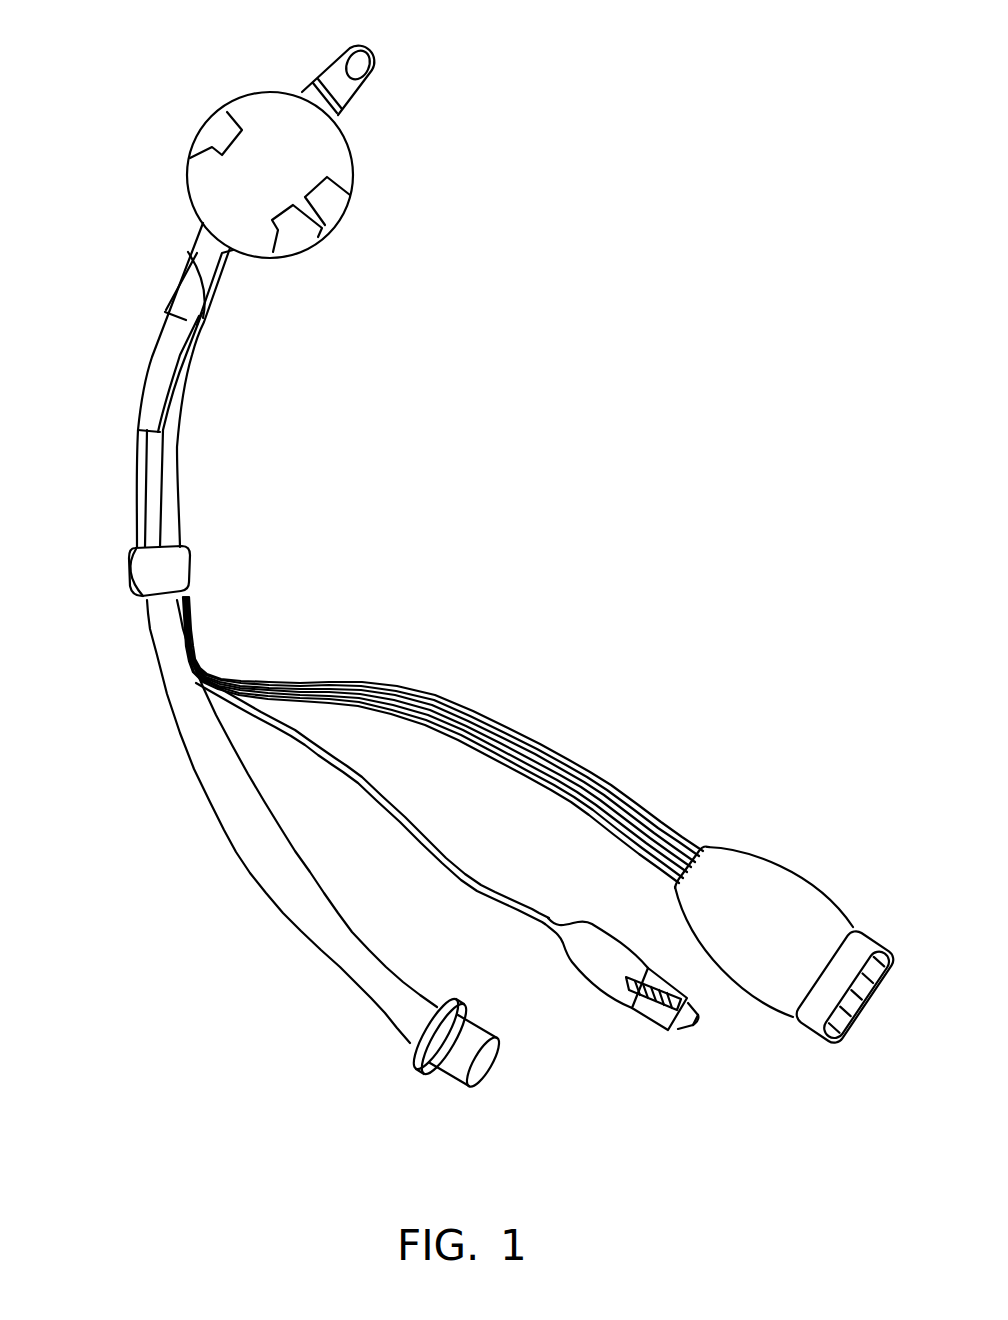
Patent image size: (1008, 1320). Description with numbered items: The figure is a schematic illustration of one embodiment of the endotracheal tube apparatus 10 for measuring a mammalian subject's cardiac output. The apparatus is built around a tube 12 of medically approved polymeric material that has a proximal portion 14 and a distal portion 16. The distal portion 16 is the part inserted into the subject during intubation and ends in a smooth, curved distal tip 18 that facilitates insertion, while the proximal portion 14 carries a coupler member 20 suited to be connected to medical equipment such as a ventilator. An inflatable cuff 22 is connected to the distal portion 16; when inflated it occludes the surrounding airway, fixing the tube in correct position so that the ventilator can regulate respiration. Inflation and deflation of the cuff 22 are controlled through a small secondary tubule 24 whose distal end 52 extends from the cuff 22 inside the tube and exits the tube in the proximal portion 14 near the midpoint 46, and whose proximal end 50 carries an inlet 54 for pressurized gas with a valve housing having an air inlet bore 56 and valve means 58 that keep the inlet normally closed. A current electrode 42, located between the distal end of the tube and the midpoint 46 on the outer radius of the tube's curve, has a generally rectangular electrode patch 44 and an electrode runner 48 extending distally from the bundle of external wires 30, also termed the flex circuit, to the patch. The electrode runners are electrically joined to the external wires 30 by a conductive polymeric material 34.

The apparatus 10 is at (106, 488).
The tube 12 is at (150, 630).
The proximal portion 14 is at (280, 895).
The distal portion 16 is at (160, 453).
The distal tip 18 is at (368, 56).
The coupler member 20 is at (460, 1067).
The inflatable cuff 22 is at (196, 204).
The secondary tubule 24 is at (468, 880).
The external wires 30 is at (534, 744).
The conductive polymeric material 34 is at (183, 574).
The current electrode 42 is at (150, 356).
The electrode patch 44 is at (150, 402).
The midpoint 46 is at (99, 581).
The electrode runner 48 is at (143, 531).
The proximal end 50 is at (687, 1027).
The distal end 52 is at (230, 262).
The inlet 54 is at (706, 1034).
The air inlet bore 56 is at (685, 1025).
The valve means 58 is at (642, 1012).